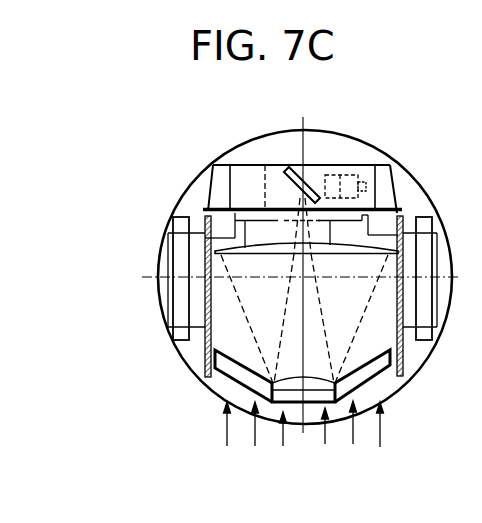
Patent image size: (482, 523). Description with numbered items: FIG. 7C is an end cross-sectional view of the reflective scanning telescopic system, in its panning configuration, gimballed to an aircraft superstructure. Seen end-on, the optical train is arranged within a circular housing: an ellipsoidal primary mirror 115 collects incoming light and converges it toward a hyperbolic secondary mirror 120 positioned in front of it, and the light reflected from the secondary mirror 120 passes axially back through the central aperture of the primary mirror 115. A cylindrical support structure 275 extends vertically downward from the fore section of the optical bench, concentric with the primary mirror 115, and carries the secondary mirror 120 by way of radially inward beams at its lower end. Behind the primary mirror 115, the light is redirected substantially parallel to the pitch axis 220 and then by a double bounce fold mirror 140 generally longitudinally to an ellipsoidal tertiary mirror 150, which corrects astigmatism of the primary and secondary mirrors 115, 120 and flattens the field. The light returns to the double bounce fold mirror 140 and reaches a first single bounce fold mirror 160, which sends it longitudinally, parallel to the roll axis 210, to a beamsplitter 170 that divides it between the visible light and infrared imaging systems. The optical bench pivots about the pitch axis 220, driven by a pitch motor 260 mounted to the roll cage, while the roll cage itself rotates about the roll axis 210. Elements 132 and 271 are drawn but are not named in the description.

The ellipsoidal primary mirror 115 is at (262, 254).
The hyperbolic secondary mirror 120 is at (323, 388).
The beam splitter mirror 132 is at (305, 180).
The double bounce fold mirror 140 is at (253, 182).
The ellipsoidal tertiary mirror 150 is at (284, 178).
The first single bounce fold mirror 160 is at (347, 175).
The beamsplitter 170 is at (366, 187).
The roll axis 210 is at (303, 274).
The pitch axis 220 is at (160, 278).
The pitch motor 260 is at (178, 305).
The reflector 271 is at (232, 372).
The cylindrical support structure 275 is at (205, 358).